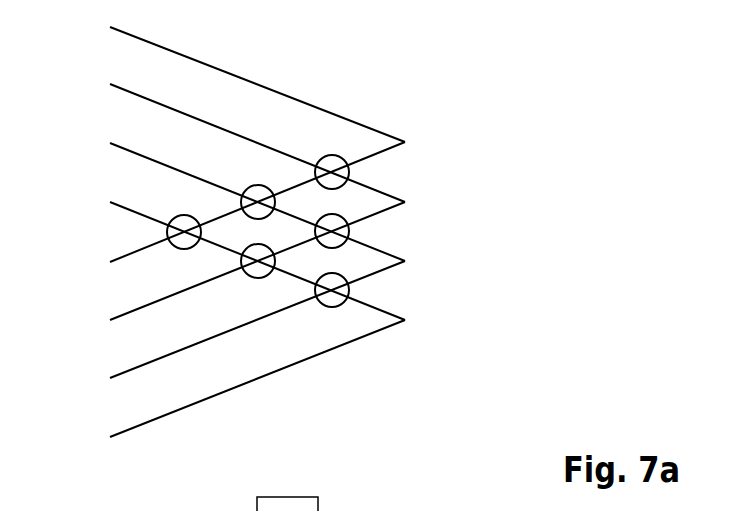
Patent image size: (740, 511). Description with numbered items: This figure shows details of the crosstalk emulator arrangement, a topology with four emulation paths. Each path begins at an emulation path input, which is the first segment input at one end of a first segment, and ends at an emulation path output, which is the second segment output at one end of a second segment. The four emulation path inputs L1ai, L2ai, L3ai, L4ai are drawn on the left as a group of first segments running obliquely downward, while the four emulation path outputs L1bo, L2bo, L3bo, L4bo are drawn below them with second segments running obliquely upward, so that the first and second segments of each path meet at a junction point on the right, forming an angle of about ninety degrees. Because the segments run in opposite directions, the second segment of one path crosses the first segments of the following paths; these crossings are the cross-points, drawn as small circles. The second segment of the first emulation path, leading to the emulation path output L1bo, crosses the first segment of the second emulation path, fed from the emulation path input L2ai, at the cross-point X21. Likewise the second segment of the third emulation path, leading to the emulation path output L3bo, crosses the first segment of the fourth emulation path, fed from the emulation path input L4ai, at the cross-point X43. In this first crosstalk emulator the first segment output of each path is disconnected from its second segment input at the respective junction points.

The cross-point X21 is at (334, 152).
The cross-point X43 is at (334, 307).
The emulation path input L1ai is at (220, 76).
The emulation path input L2ai is at (220, 132).
The emulation path input L3ai is at (220, 191).
The emulation path input L4ai is at (220, 250).
The emulation path output L1bo is at (220, 213).
The emulation path output L2bo is at (220, 273).
The emulation path output L3bo is at (220, 332).
The emulation path output L4bo is at (220, 391).